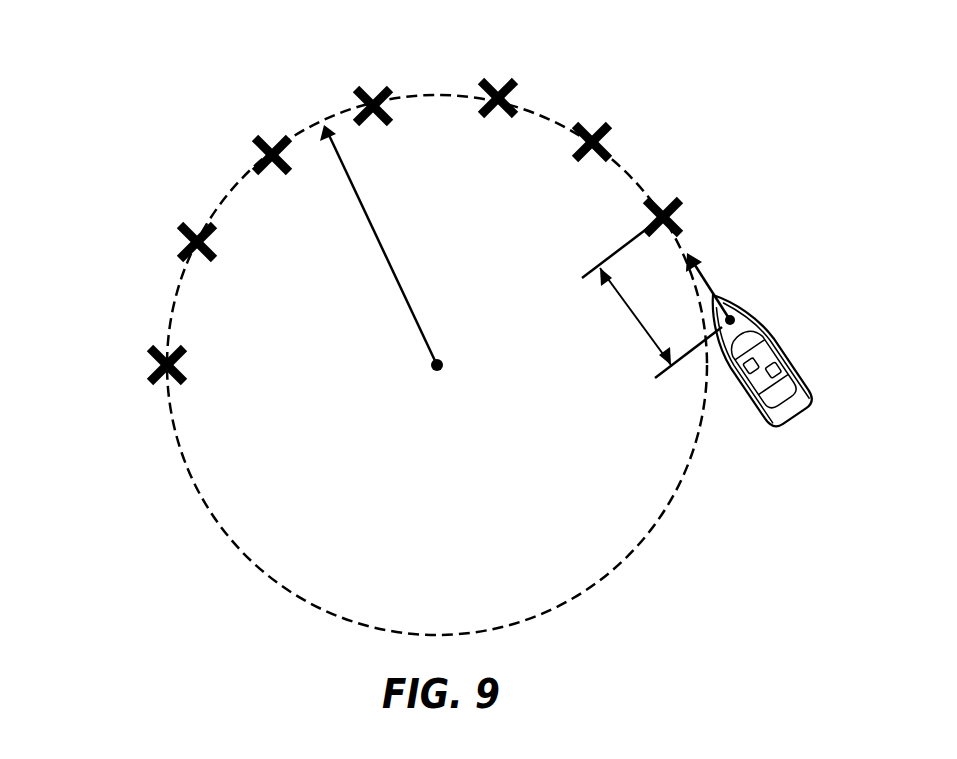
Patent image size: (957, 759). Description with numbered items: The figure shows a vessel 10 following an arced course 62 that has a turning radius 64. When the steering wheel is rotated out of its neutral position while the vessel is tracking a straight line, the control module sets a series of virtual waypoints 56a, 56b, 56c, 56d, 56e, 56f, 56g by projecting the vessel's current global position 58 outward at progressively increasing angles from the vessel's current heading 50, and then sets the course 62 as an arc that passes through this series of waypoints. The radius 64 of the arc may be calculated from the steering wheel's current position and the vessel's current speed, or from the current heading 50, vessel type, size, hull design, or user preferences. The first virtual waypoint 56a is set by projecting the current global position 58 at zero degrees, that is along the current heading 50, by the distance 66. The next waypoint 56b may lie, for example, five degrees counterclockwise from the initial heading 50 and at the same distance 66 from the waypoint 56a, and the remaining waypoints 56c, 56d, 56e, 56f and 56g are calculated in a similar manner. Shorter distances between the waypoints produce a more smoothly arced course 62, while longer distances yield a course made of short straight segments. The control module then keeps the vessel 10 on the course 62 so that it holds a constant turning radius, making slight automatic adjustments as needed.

The vessel 10 is at (787, 343).
The current heading 50 is at (710, 287).
The virtual waypoint 56a is at (666, 207).
The virtual waypoint 56b is at (593, 132).
The virtual waypoint 56c is at (500, 88).
The virtual waypoint 56d is at (376, 97).
The virtual waypoint 56e is at (258, 153).
The virtual waypoint 56f is at (185, 240).
The virtual waypoint 56g is at (150, 365).
The current global position 58 is at (735, 319).
The course 62 is at (452, 92).
The radius 64 is at (378, 235).
The distance 66 is at (630, 316).